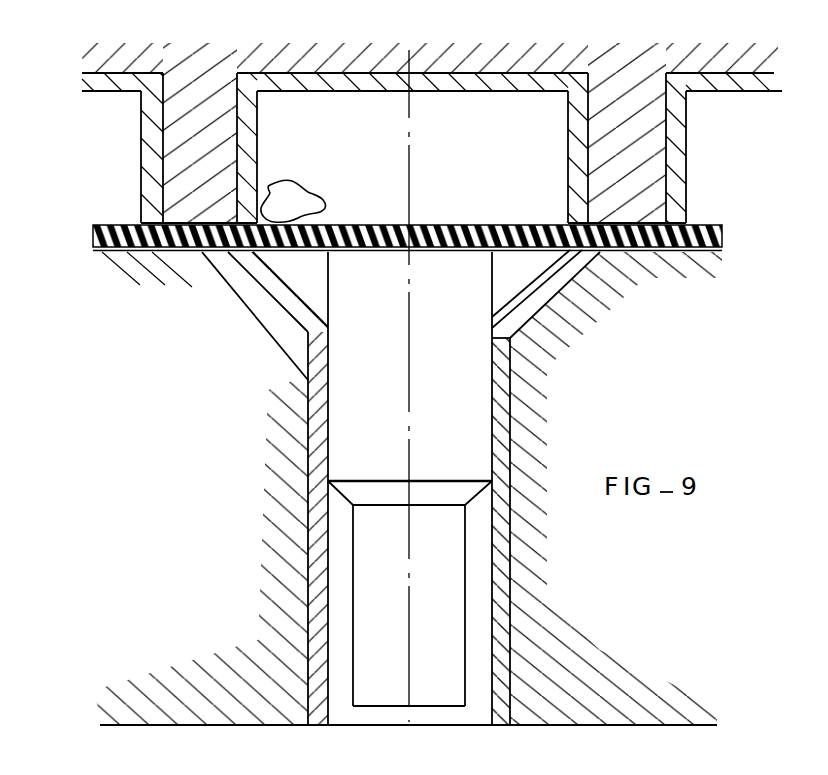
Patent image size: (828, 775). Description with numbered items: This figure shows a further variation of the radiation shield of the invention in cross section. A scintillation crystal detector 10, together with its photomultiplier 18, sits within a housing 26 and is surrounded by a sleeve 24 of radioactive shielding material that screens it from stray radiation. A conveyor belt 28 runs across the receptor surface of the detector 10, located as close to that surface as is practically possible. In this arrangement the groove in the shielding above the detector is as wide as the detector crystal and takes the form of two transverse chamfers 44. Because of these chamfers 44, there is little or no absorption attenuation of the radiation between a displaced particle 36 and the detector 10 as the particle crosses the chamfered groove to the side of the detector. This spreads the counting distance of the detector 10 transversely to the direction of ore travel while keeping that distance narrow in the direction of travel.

The scintillation crystal detector 10 is at (376, 352).
The photomultiplier 18 is at (450, 588).
The sleeve of radioactive shielding material 24 is at (500, 362).
The housing 26 is at (215, 455).
The conveyor belt 28 is at (442, 234).
The particle 36 is at (303, 197).
The transverse chamfers 44 is at (315, 272).